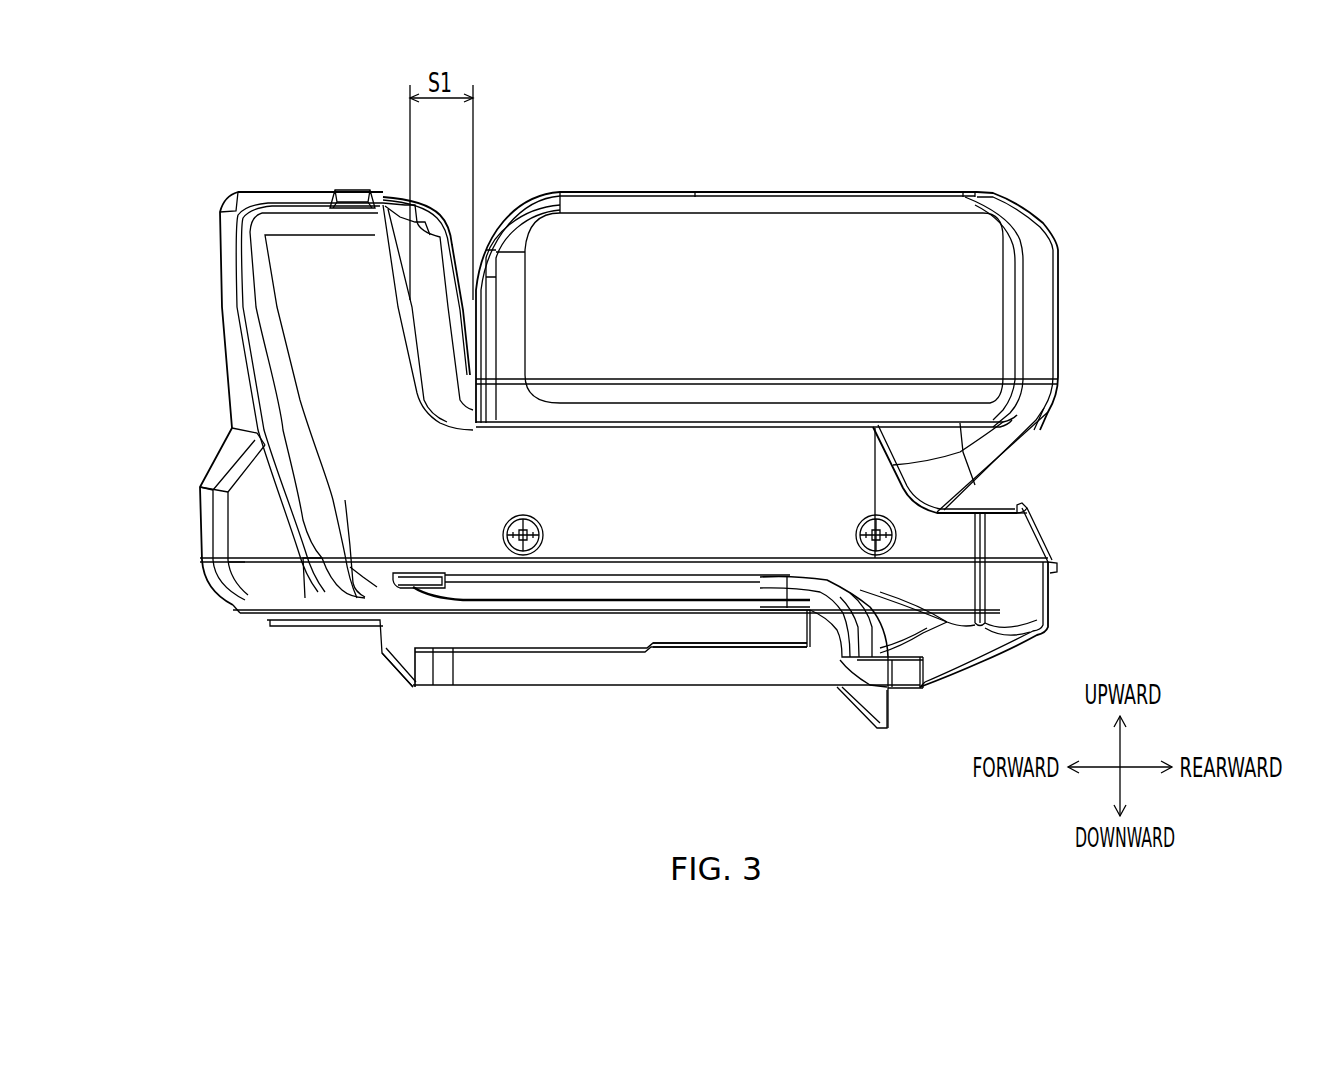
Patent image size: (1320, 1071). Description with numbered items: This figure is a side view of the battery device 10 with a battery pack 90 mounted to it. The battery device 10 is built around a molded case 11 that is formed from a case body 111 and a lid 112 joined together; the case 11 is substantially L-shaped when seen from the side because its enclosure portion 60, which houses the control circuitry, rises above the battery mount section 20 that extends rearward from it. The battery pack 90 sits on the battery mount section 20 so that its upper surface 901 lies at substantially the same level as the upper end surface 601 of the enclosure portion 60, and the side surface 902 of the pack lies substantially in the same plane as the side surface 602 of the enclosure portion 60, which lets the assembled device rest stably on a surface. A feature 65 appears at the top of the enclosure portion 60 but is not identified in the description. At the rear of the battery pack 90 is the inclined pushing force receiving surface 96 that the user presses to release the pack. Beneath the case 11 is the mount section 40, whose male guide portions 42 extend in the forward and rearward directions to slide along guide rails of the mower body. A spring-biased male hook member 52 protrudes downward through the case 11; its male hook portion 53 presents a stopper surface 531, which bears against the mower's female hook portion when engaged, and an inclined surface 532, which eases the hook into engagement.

The battery device 10 is at (300, 140).
The handle top portion 65 is at (262, 190).
The upper end surface 601 is at (355, 188).
The enclosure portion 60 is at (240, 281).
The side surface 602 is at (310, 331).
The battery mount section 20 is at (697, 425).
The upper surface 901 is at (740, 192).
The side surface 902 is at (827, 245).
The battery pack 90 is at (977, 270).
The pushing force receiving surface 96 is at (1020, 458).
The case 11 is at (132, 520).
The case body 111 is at (250, 534).
The lid 112 is at (250, 570).
The mount section 40 is at (552, 690).
The male guide portion 42 is at (655, 670).
The inclined surface 532 is at (860, 713).
The stopper surface 531 is at (890, 707).
The male hook portion 53 is at (945, 790).
The male hook member 52 is at (922, 684).